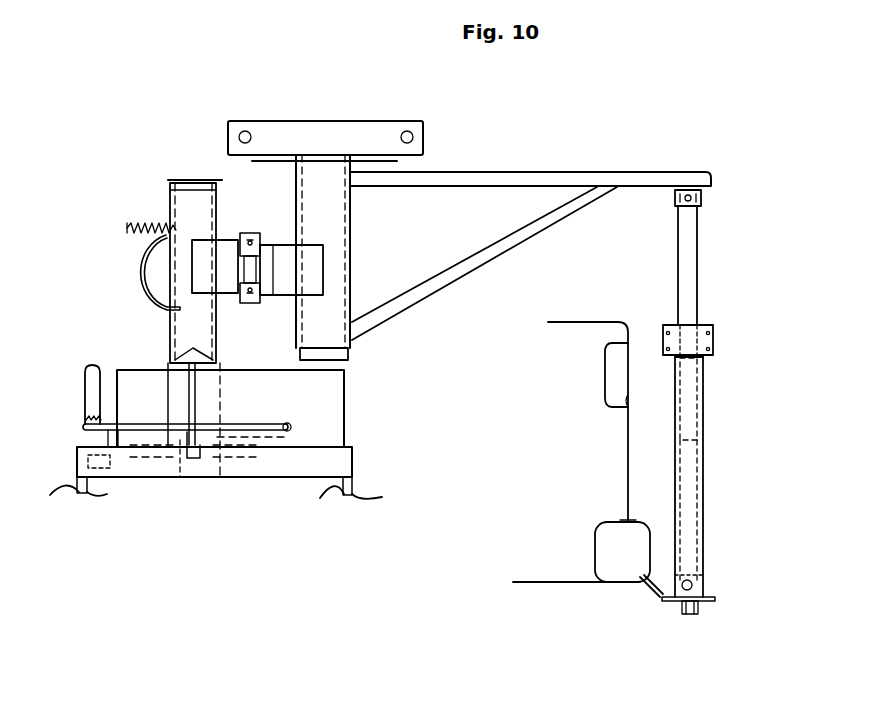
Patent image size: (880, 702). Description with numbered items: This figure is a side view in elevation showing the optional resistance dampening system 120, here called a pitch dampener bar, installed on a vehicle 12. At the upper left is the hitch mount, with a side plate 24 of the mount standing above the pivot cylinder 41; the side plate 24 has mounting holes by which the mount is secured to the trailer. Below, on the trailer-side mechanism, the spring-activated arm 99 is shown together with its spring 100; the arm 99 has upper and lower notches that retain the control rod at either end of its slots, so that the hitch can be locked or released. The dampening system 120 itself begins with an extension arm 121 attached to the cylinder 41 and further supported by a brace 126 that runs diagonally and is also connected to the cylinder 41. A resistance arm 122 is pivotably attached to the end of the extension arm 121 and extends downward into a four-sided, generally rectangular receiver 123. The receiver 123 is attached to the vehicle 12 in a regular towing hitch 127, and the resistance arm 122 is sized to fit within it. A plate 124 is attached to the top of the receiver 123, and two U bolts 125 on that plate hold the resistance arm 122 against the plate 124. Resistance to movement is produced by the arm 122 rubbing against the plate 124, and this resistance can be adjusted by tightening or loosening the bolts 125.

The vehicle 12 is at (581, 429).
The side plate 24 is at (326, 107).
The cylinder 41 is at (353, 230).
The arm 99 is at (85, 400).
The spring 100 is at (116, 372).
The resistance dampening system 120 is at (741, 145).
The extension arm 121 is at (530, 147).
The resistance arm 122 is at (742, 264).
The receiver 123 is at (736, 484).
The plate 124 is at (751, 321).
The U bolts 125 is at (738, 371).
The brace 126 is at (484, 266).
The towing hitch 127 is at (657, 600).